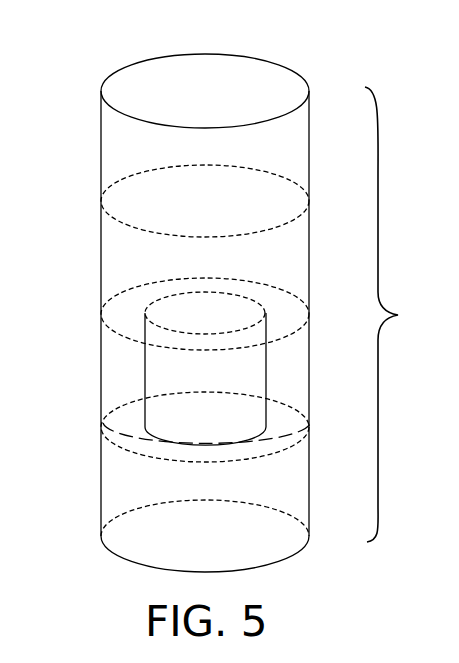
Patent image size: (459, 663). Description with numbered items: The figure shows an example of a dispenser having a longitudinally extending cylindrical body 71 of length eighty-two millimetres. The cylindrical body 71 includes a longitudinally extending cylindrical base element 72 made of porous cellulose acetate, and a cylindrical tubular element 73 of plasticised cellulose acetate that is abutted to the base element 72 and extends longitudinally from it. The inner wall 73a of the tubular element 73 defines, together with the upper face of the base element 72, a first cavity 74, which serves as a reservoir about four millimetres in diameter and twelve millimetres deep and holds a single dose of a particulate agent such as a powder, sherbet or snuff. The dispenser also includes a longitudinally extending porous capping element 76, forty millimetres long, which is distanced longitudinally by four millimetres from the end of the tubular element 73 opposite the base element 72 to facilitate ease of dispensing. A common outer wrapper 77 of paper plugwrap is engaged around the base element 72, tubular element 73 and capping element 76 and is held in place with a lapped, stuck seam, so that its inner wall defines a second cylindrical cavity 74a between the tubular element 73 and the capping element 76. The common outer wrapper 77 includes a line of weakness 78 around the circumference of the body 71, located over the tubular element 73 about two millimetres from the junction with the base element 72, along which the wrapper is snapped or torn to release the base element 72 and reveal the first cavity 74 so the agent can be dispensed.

The longitudinally extending cylindrical body 71 is at (397, 314).
The cylindrical base element 72 is at (112, 505).
The cylindrical tubular element 73 is at (112, 393).
The inner wall 73a is at (146, 351).
The first cavity 74 is at (246, 375).
The second cylindrical cavity 74a is at (124, 268).
The capping element 76 is at (255, 72).
The common outer wrapper 77 is at (101, 147).
The line of weakness 78 is at (113, 430).